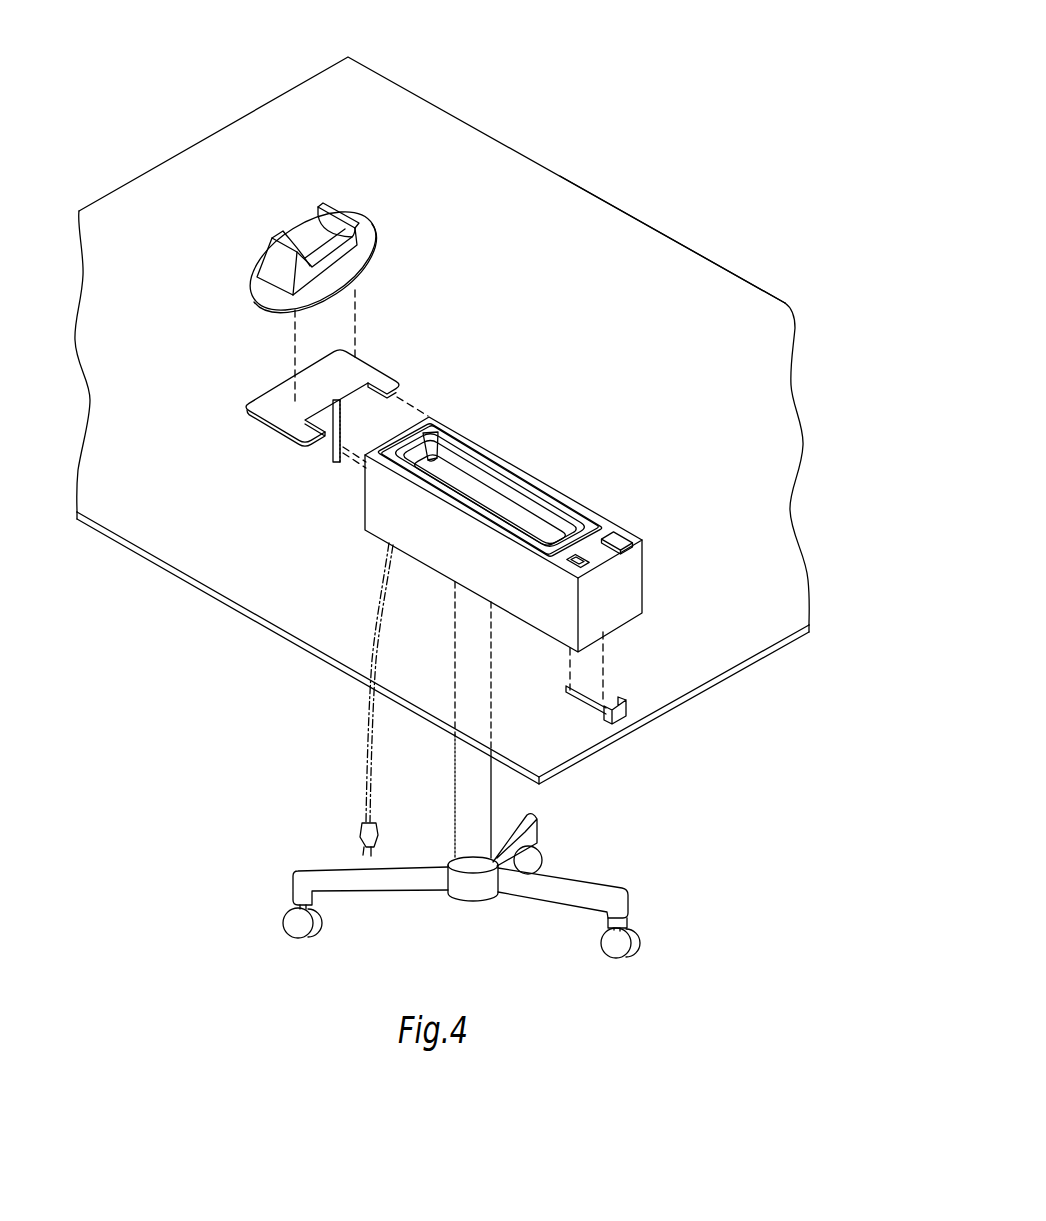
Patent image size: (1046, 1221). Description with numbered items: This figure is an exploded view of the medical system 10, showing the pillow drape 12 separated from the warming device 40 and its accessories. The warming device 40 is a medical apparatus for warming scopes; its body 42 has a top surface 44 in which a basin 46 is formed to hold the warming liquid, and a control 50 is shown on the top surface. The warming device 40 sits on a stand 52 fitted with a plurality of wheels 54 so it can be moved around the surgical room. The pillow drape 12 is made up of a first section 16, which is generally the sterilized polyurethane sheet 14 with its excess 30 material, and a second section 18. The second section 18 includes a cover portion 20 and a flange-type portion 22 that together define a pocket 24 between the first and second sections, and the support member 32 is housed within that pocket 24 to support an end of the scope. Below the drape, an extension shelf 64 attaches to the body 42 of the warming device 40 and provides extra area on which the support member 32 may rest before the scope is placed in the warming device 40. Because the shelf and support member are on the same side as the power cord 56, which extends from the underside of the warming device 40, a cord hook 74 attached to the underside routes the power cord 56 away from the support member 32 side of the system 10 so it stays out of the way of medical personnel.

The medical system 10 is at (672, 24).
The pillow drape 12 is at (504, 141).
The sheet 14 is at (597, 213).
The first section 16 is at (372, 95).
The excess 30 is at (680, 263).
The second section 18 is at (372, 231).
The cover portion 20 is at (273, 237).
The flange-type portion 22 is at (262, 294).
The pocket 24 is at (272, 262).
The support member 32 is at (336, 196).
The extension shelf 64 is at (262, 402).
The warming device 40 is at (551, 471).
The body 42 is at (635, 590).
The top surface 44 is at (608, 527).
The basin 46 is at (498, 480).
The button 50 is at (562, 560).
The stand 52 is at (461, 805).
The wheels 54 is at (310, 916).
The power cord 56 is at (372, 753).
The cord hook 74 is at (617, 703).